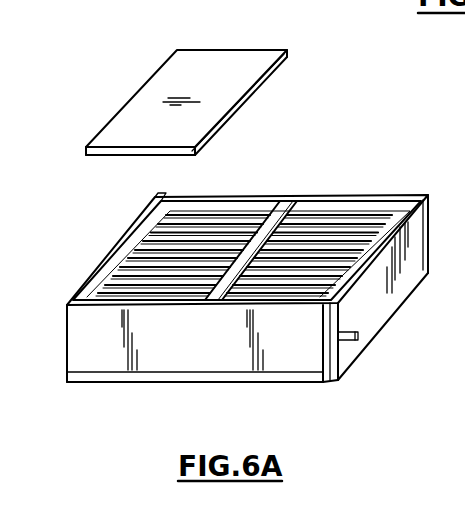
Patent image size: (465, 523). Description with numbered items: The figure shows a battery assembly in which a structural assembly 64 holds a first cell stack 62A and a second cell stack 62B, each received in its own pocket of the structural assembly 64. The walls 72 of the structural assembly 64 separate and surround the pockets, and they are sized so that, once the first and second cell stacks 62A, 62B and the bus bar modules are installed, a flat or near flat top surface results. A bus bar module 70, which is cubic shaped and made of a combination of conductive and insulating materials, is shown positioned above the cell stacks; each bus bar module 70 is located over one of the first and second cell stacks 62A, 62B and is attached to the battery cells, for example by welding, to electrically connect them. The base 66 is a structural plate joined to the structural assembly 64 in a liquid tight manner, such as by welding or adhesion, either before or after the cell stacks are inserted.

The bus bar module 70 is at (209, 52).
The structural assembly 64 is at (90, 250).
The first cell stack 62A is at (234, 214).
The second cell stack 62B is at (362, 216).
The base 66 is at (270, 380).
The walls 72 is at (133, 245).